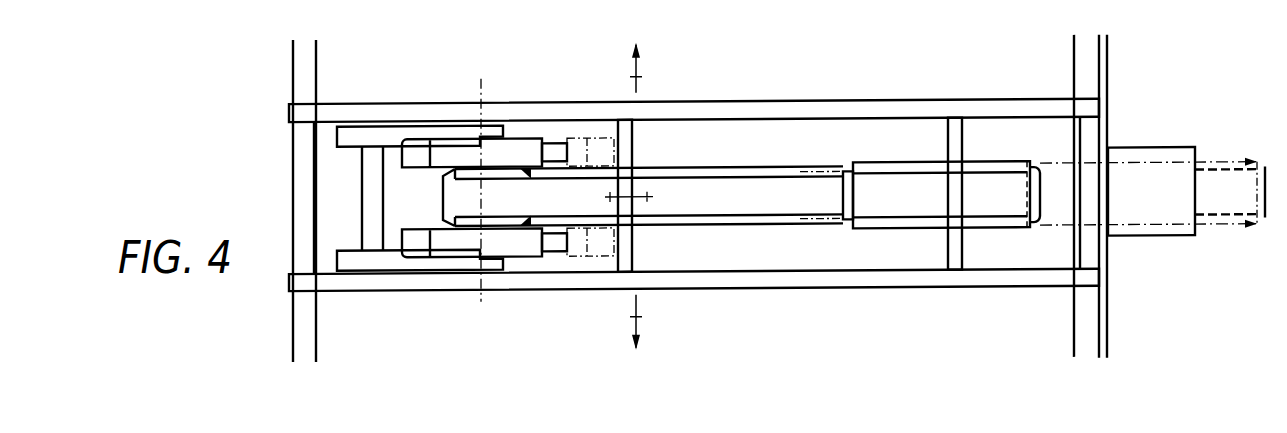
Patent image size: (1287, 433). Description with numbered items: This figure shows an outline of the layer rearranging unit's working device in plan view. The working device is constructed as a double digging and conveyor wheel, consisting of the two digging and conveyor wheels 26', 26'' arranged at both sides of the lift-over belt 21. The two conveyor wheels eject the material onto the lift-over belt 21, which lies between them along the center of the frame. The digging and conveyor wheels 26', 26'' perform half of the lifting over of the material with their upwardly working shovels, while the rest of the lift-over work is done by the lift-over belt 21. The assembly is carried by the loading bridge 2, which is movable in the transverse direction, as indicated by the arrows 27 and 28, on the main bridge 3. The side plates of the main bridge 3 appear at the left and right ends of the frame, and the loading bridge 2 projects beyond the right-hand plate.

The loading bridge 2 is at (1172, 271).
The main bridge 3 is at (303, 317).
The lift-over belt 21 is at (757, 197).
The digging and conveyor wheel 26' is at (508, 99).
The digging and conveyor wheel 26'' is at (508, 296).
The arrow 27 is at (611, 72).
The arrow 28 is at (611, 322).